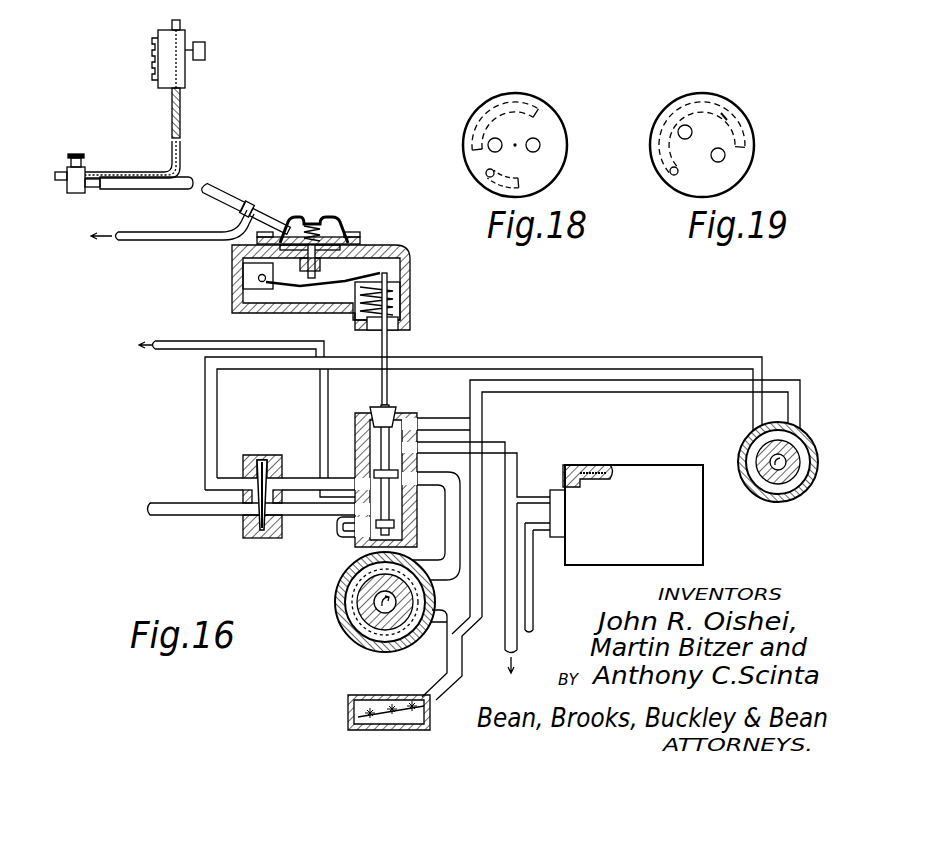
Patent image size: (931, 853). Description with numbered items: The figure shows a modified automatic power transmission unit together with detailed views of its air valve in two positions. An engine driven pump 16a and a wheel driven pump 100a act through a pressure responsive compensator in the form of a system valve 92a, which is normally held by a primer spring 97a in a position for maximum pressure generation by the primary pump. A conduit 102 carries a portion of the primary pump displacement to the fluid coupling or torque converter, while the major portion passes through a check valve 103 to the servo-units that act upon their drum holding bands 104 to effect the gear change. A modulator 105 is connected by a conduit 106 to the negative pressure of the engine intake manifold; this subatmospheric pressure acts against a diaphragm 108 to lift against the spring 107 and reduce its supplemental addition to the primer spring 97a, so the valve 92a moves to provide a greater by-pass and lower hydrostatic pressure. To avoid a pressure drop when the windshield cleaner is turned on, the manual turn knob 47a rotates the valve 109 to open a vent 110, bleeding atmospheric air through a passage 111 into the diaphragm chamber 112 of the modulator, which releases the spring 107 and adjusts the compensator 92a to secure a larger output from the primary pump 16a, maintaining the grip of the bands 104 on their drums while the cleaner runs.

In FIG. 16, the manual turn knob 47a is at (82, 158).
In FIG. 16, the passage 111 is at (206, 184).
In FIG. 16, the conduit 106 is at (182, 241).
In FIG. 16, the diaphragm chamber 112 is at (289, 223).
In FIG. 16, the spring 107 is at (323, 223).
In FIG. 16, the diaphragm 108 is at (341, 233).
In FIG. 16, the modulator 105 is at (400, 247).
In FIG. 16, the primer spring 97a is at (405, 300).
In FIG. 16, the conduit 102 is at (318, 385).
In FIG. 16, the check valve 103 is at (268, 457).
In FIG. 16, the system valve 92a is at (392, 412).
In FIG. 16, the drum holding bands 104 is at (578, 466).
In FIG. 16, the wheel driven pump 100a is at (768, 503).
In FIG. 16, the engine driven pump 16a is at (350, 653).
In FIG. 18, the valve 109 is at (550, 118).
In FIG. 19, the valve 109 is at (738, 118).
In FIG. 18, the vent 110 is at (488, 180).
In FIG. 19, the vent 110 is at (671, 173).